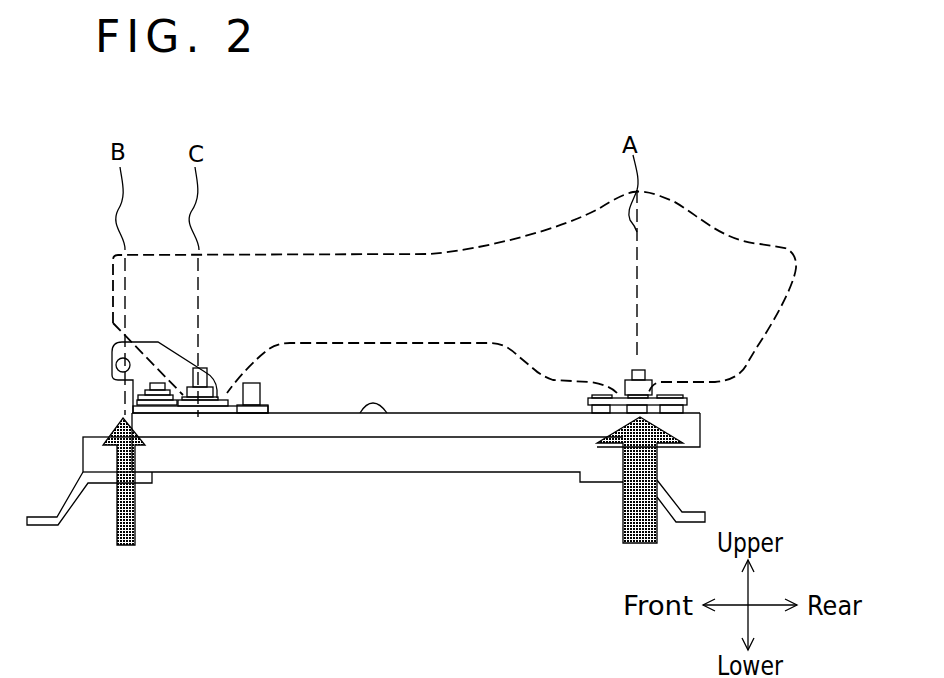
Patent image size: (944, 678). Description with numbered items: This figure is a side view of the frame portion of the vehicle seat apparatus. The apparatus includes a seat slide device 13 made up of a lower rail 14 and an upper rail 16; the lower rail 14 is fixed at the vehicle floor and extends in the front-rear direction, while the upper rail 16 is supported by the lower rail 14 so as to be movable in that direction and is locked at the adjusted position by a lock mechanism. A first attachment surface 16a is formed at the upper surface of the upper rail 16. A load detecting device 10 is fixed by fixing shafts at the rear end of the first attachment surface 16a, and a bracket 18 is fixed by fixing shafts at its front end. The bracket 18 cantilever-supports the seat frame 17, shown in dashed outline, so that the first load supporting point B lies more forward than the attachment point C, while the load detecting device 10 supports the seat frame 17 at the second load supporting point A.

The load detecting device 10 is at (592, 425).
The seat slide device 13 is at (436, 486).
The lower rail 14 is at (205, 460).
The upper rail 16 is at (295, 427).
The first attachment surface 16a is at (370, 407).
The seat frame 17 is at (473, 243).
The bracket 18 is at (100, 361).